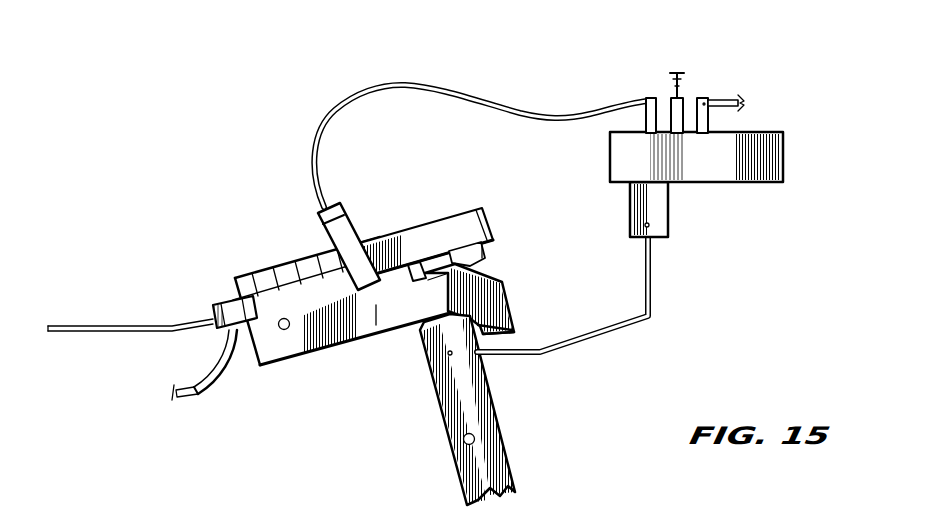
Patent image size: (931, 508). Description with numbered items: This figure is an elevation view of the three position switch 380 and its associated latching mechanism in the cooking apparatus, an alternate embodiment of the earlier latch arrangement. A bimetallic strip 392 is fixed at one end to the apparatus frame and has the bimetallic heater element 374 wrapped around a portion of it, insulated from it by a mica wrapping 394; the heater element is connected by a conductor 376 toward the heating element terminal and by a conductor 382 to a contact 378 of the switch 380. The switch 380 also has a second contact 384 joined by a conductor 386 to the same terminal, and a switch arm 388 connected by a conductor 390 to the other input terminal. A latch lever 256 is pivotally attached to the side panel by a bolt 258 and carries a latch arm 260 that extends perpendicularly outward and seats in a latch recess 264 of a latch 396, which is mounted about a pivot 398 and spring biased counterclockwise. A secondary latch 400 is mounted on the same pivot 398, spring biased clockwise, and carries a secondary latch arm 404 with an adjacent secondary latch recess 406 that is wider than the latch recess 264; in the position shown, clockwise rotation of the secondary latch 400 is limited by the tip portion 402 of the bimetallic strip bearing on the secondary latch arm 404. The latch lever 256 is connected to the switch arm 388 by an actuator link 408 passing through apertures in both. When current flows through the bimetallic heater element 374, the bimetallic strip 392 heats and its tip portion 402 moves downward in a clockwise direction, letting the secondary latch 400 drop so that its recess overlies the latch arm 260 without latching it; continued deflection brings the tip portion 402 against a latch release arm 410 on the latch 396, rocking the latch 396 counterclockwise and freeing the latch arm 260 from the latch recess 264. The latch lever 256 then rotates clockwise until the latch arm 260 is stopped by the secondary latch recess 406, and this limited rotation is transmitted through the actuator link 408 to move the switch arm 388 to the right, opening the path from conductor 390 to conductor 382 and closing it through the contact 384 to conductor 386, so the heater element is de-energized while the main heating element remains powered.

The latch lever 256 is at (517, 409).
The bolt 258 is at (532, 420).
The latch arm 260 is at (363, 340).
The latch recess 264 is at (404, 340).
The bimetallic heater element 374 is at (233, 381).
The conductor 376 is at (144, 409).
The contact 378 is at (602, 85).
The three position switch 380 is at (743, 134).
The conductor 382 is at (480, 146).
The second contact 384 is at (647, 67).
The conductor 386 is at (719, 52).
The switch arm 388 is at (717, 209).
The conductor 390 is at (752, 86).
The bimetallic strip 392 is at (130, 291).
The mica wrapping 394 is at (216, 275).
The latch 396 is at (504, 294).
The pivot 398 is at (351, 323).
The secondary latch 400 is at (431, 219).
The tip portion 402 is at (536, 239).
The secondary latch arm 404 is at (513, 212).
The secondary latch recess 406 is at (379, 228).
The actuator link 408 is at (571, 309).
The latch release arm 410 is at (539, 312).